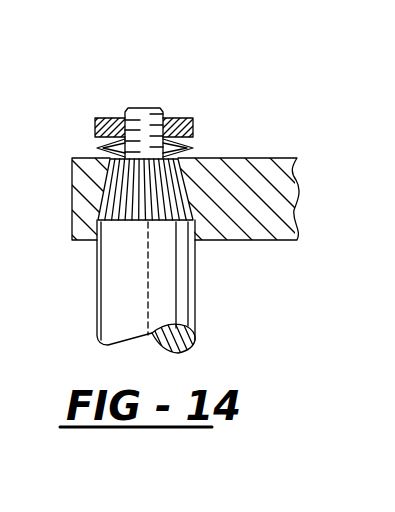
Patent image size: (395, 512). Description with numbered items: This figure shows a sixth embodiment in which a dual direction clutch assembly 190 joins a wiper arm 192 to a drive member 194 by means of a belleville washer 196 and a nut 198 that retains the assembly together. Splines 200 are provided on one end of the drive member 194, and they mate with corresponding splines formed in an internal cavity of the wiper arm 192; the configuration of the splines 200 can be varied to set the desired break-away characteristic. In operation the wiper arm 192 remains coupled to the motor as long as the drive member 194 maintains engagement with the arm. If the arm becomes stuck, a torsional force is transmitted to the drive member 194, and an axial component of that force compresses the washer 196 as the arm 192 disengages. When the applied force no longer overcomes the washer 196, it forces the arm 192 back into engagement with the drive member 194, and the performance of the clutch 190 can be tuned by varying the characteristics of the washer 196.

The dual direction clutch assembly 190 is at (296, 112).
The wiper arm 192 is at (295, 160).
The drive member 194 is at (190, 288).
The belleville washer 196 is at (195, 151).
The nut 198 is at (100, 117).
The splines 200 is at (108, 205).